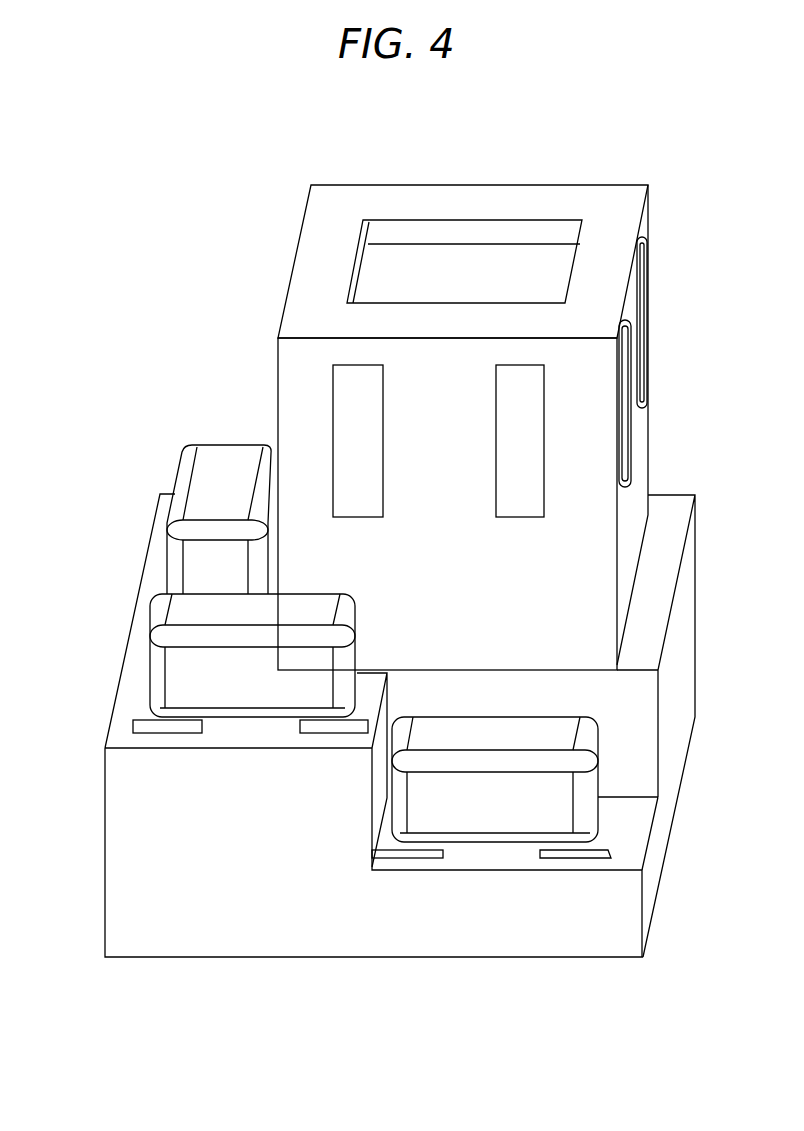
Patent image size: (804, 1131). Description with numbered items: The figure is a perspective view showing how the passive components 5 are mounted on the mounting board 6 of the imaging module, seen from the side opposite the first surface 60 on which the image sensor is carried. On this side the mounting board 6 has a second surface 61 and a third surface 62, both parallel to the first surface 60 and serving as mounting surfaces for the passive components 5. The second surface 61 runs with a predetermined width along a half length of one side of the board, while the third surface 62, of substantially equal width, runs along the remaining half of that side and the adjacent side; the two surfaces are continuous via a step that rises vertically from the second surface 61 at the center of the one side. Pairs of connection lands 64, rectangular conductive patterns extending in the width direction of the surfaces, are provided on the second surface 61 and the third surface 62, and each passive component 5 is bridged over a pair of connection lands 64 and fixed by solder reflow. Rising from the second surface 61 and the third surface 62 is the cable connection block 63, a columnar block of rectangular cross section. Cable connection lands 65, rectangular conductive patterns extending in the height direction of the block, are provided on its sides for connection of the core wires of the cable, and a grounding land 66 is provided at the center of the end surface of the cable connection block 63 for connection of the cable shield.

The passive component 5 is at (220, 455).
The mounting board 6 is at (512, 571).
The first surface 60 is at (383, 746).
The second surface 61 is at (628, 850).
The third surface 62 is at (140, 645).
The cable connection block 63 is at (652, 477).
The connection land 64 is at (165, 720).
The cable connection land 65 is at (652, 297).
The grounding land 66 is at (375, 265).